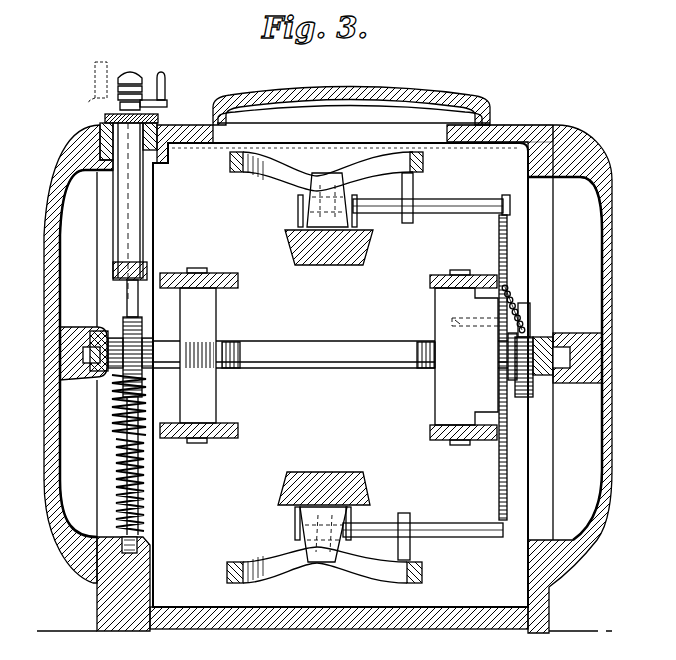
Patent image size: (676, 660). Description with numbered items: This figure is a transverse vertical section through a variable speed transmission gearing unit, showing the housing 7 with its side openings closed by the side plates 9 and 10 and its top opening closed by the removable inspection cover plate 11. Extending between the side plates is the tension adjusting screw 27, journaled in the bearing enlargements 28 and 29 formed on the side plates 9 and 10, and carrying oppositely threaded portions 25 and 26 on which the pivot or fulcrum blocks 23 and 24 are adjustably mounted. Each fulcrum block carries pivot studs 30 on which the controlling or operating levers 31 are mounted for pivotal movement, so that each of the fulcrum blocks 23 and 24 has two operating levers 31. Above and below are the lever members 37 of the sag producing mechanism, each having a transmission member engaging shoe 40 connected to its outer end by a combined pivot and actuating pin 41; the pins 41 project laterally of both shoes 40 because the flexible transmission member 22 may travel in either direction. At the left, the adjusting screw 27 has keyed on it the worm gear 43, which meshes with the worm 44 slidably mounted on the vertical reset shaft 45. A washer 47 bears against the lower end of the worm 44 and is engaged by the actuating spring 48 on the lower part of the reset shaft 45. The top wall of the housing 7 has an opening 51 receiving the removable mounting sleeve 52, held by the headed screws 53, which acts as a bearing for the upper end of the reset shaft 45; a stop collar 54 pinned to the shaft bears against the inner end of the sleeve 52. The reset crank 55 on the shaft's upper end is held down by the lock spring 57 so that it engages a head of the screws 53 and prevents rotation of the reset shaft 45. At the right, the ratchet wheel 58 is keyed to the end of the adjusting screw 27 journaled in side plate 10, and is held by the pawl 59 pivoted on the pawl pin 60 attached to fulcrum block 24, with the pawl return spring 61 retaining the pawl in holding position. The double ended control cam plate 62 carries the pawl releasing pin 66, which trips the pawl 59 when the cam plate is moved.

The housing 7 is at (500, 125).
The side plate 9 is at (44, 262).
The side plate 10 is at (612, 292).
The inspection cover plate 11 is at (380, 93).
The flexible transmission member 22 is at (341, 472).
The fulcrum block 23 is at (219, 332).
The fulcrum block 24 is at (435, 322).
The threaded portion 25 is at (230, 370).
The threaded portion 26 is at (426, 370).
The adjusting screw 27 is at (298, 341).
The bearing enlargement 28 is at (90, 327).
The bearing enlargement 29 is at (583, 333).
The pivot stud 30 is at (200, 268).
The operating lever 31 is at (238, 281).
The lever member 37 is at (240, 173).
The transmission member engaging shoe 40 is at (328, 179).
The combined pivot and actuating pin 41 is at (455, 212).
The worm gear 43 is at (143, 336).
The worm 44 is at (110, 413).
The reset shaft 45 is at (128, 300).
The washer 47 is at (113, 438).
The actuating spring 48 is at (146, 523).
The opening 51 is at (158, 152).
The mounting sleeve 52 is at (146, 230).
The headed screw 53 is at (108, 112).
The stop collar 54 is at (113, 270).
The reset crank 55 is at (168, 98).
The lock spring 57 is at (130, 73).
The ratchet wheel 58 is at (530, 398).
The pawl 59 is at (533, 312).
The pawl pin 60 is at (457, 319).
The pawl return spring 61 is at (509, 302).
The control cam plate 62 is at (499, 478).
The pawl releasing pin 66 is at (522, 300).